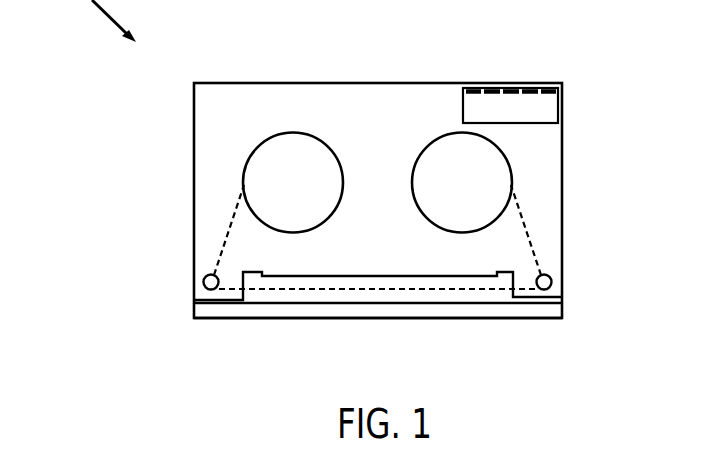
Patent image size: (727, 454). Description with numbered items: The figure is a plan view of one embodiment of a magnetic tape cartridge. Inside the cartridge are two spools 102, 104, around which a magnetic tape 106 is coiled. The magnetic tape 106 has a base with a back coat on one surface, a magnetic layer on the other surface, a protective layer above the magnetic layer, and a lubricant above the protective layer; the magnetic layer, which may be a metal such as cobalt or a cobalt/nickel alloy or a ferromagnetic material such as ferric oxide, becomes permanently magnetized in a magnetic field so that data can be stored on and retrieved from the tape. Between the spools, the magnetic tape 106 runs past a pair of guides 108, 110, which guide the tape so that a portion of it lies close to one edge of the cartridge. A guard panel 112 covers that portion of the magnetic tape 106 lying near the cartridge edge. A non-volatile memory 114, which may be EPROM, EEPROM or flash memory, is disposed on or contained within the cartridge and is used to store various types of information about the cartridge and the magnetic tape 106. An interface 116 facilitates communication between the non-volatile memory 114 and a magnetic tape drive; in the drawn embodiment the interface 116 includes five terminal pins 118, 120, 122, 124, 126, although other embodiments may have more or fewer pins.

The spool 102 is at (243, 161).
The spool 104 is at (513, 160).
The magnetic tape 106 is at (538, 232).
The guide 108 is at (195, 279).
The guide 110 is at (563, 278).
The guard panel 112 is at (563, 310).
The non-volatile memory 114 is at (562, 105).
The interface 116 is at (565, 86).
The terminal pin 118 is at (473, 88).
The terminal pin 120 is at (494, 88).
The terminal pin 122 is at (515, 88).
The terminal pin 124 is at (536, 88).
The terminal pin 126 is at (556, 88).